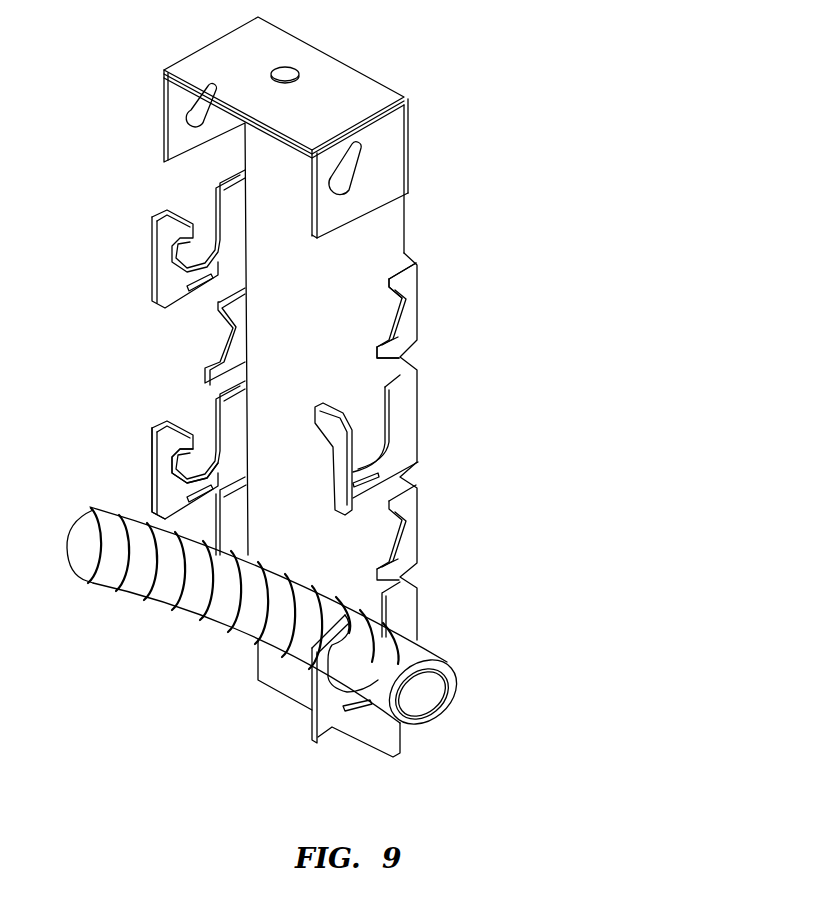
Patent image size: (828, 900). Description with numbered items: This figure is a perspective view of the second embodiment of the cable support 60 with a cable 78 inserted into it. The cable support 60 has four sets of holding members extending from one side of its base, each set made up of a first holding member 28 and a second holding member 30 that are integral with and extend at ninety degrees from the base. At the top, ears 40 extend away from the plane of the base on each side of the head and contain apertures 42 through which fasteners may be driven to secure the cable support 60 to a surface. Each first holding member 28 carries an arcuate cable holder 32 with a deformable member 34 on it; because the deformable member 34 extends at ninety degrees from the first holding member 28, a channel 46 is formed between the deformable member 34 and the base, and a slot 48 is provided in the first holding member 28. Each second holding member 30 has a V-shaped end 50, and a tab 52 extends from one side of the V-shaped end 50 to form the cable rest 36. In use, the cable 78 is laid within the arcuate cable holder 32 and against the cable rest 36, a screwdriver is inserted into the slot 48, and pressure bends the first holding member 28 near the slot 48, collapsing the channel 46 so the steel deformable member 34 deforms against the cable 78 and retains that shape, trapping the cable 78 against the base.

The first holding member 28 is at (165, 425).
The second holding member 30 is at (412, 293).
The arcuate cable holder 32 is at (215, 243).
The deformable member 34 is at (163, 492).
The cable rest 36 is at (378, 320).
The ears 40 is at (360, 101).
The apertures 42 is at (286, 68).
The channel 46 is at (213, 430).
The slot 48 is at (377, 693).
The V-shaped end 50 is at (400, 302).
The tab 52 is at (372, 350).
The cable support 60 is at (584, 381).
The cable 78 is at (108, 514).